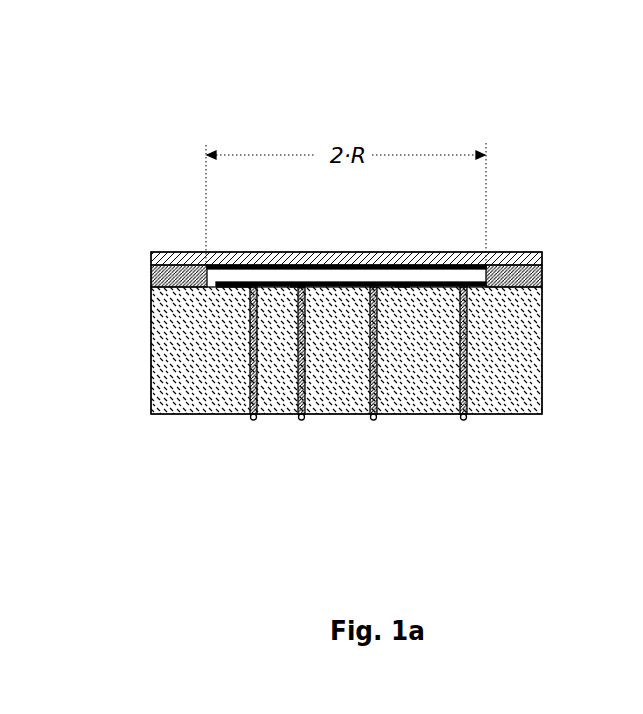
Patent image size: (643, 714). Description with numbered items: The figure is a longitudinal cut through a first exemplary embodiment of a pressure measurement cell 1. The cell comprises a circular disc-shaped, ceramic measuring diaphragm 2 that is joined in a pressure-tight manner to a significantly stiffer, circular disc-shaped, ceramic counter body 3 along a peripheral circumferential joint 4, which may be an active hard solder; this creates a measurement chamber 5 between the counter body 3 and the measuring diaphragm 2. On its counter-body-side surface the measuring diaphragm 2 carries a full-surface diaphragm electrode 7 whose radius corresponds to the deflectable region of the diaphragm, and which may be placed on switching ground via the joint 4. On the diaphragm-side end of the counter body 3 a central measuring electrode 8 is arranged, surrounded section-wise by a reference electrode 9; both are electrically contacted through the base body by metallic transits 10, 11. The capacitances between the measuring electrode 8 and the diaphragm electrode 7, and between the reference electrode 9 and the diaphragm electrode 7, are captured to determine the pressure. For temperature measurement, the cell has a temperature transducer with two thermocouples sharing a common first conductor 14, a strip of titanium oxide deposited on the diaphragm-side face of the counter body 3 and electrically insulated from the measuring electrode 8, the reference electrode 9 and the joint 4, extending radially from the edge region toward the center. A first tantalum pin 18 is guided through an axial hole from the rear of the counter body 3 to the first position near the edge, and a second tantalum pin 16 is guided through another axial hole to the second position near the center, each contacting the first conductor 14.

The pressure measurement cell 1 is at (168, 130).
The measuring diaphragm 2 is at (542, 252).
The counter body 3 is at (542, 367).
The joint 4 is at (542, 272).
The measurement chamber 5 is at (212, 275).
The diaphragm electrode 7 is at (247, 268).
The measuring electrode 8 is at (297, 288).
The reference electrode 9 is at (227, 288).
The metallic transit 10 is at (302, 419).
The metallic transit 11 is at (253, 419).
The first conductor 14 is at (401, 288).
The second Ta pin 16 is at (373, 419).
The first Ta pin 18 is at (463, 419).